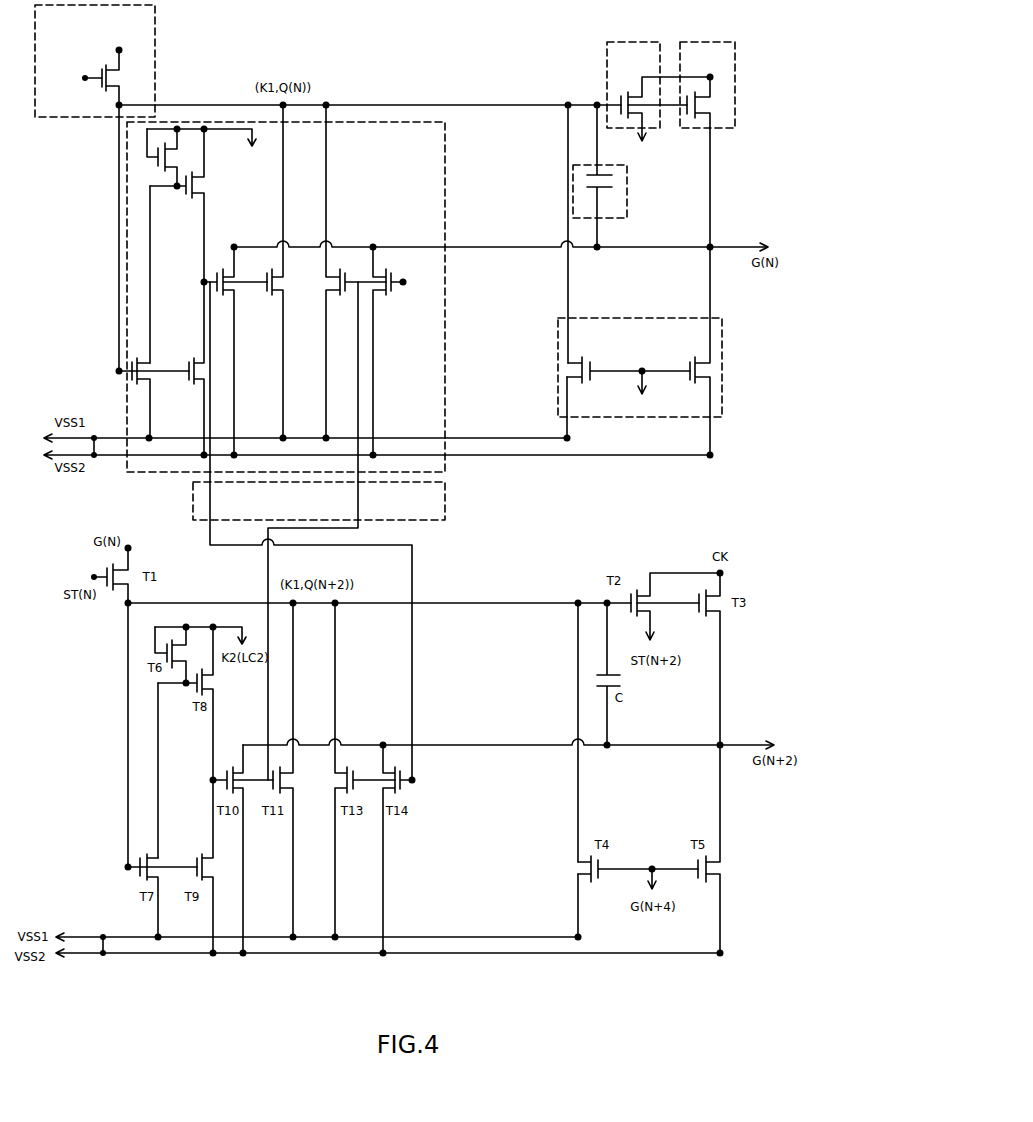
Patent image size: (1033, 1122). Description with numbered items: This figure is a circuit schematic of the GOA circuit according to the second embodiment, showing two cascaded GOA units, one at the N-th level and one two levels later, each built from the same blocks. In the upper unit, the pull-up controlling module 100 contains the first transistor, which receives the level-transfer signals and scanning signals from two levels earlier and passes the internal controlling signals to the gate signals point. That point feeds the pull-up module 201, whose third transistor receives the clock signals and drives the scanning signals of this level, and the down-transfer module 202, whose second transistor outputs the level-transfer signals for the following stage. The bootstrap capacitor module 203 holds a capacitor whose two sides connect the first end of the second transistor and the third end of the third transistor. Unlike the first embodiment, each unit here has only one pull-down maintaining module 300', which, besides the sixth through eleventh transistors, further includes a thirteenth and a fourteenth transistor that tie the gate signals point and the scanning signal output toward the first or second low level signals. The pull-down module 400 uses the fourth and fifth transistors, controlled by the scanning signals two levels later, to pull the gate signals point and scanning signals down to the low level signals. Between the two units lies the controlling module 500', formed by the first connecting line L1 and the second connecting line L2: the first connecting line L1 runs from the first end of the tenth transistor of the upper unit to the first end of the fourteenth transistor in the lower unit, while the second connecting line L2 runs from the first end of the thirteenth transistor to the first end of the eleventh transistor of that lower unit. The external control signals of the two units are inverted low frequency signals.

The pull-up controlling module 100 is at (155, 40).
The pull-up module 201 is at (695, 37).
The down-transfer module 202 is at (632, 38).
The bootstrap capacitor module 203 is at (627, 210).
The pull-down maintaining module 300' is at (314, 288).
The pull-down module 400 is at (722, 333).
The controlling module 500' is at (352, 496).
The first connecting line L1 is at (210, 515).
The second connecting line L2 is at (360, 512).